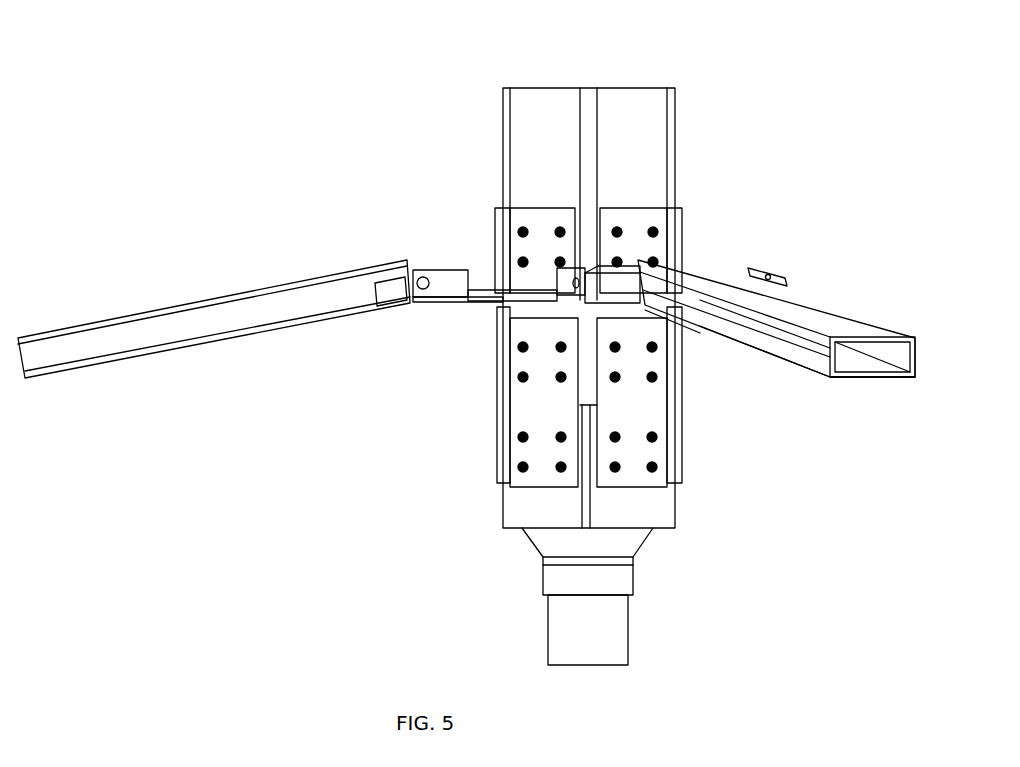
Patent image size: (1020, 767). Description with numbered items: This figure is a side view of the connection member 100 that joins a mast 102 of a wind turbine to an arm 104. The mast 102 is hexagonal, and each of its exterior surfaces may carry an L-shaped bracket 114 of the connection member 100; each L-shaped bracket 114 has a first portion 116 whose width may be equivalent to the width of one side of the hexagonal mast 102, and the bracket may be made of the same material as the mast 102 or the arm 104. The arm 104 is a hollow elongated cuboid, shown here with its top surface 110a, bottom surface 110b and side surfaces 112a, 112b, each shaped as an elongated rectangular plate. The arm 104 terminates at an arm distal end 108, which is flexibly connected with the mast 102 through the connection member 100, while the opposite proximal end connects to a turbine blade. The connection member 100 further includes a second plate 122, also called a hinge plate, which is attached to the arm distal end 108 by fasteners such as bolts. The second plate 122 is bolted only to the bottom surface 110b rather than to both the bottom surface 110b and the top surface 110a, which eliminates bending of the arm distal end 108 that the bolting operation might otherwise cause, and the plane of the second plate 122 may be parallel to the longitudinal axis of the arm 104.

The connection member 100 is at (468, 318).
The mast 102 is at (527, 140).
The arm 104 is at (120, 333).
The arm distal end 108 is at (705, 270).
The top surface 110a is at (843, 318).
The bottom surface 110b is at (845, 374).
The side surface 112a is at (790, 345).
The side surface 112b is at (898, 378).
The L-shaped bracket 114 is at (493, 290).
The first portion 116 is at (540, 222).
The second plate 122 is at (647, 308).